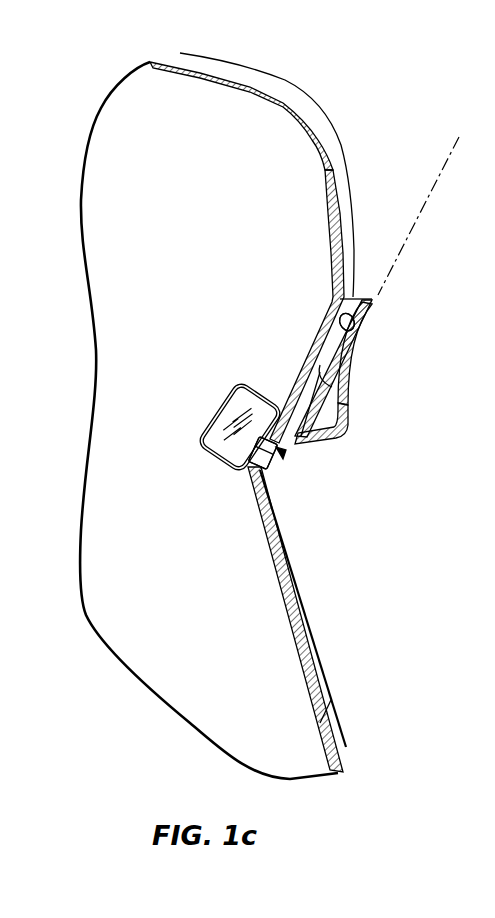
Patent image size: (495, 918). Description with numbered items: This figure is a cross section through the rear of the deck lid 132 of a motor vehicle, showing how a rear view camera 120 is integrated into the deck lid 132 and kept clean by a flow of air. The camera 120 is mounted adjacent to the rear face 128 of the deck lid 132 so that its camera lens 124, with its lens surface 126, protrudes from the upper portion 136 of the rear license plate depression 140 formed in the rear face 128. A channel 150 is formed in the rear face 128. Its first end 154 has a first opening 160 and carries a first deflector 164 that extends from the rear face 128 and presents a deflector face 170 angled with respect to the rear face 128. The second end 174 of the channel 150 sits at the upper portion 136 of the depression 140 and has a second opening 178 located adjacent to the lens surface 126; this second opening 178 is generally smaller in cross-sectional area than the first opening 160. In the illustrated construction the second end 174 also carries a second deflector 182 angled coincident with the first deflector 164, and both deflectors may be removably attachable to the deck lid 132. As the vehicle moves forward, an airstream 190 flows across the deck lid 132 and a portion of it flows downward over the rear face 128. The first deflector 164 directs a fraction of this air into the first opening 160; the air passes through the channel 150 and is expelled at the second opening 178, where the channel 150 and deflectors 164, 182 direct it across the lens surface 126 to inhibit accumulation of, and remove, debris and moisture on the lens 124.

The rear view camera 120 is at (206, 450).
The camera lens 124 is at (270, 468).
The lens surface 126 is at (287, 462).
The rear face 128 is at (353, 282).
The deck lid 132 is at (206, 72).
The upper portion 136 is at (327, 455).
The rear license plate depression 140 is at (364, 601).
The channel 150 is at (332, 387).
The first end 154 is at (370, 299).
The first opening 160 is at (357, 298).
The first deflector 164 is at (353, 328).
The deflector face 170 is at (358, 311).
The second end 174 is at (295, 446).
The second opening 178 is at (288, 458).
The second deflector 182 is at (288, 450).
The airstream 190 is at (307, 92).